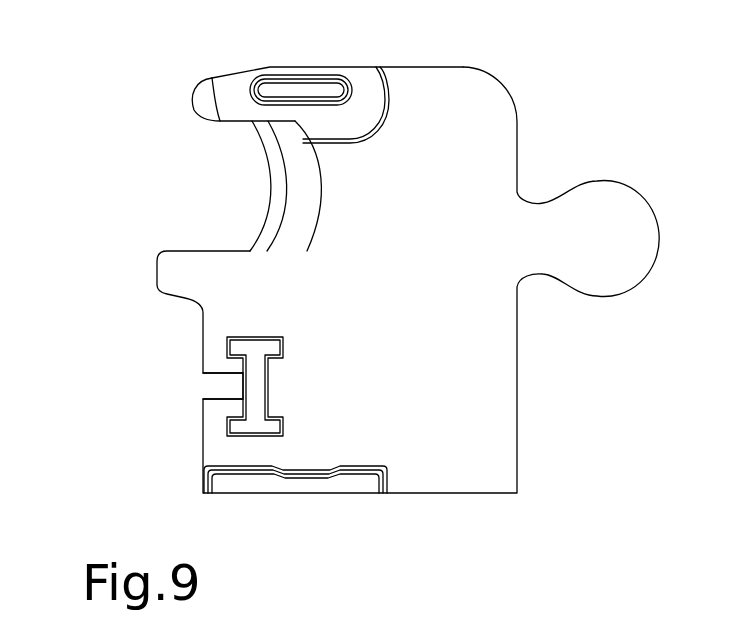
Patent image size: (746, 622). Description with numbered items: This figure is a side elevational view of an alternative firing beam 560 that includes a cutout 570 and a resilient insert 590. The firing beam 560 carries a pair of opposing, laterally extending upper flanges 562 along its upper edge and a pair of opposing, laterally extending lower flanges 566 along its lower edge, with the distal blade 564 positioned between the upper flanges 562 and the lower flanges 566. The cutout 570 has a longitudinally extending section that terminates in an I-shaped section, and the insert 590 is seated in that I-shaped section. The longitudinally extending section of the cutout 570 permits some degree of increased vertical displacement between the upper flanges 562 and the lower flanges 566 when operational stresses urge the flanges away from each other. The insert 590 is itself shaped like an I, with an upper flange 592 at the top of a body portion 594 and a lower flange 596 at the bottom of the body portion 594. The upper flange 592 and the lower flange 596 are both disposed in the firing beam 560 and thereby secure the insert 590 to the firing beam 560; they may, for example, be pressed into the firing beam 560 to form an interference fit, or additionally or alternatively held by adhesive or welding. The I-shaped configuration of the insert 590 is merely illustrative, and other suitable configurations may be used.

The firing beam 560 is at (143, 160).
The upper flanges 562 is at (303, 90).
The distal blade 564 is at (271, 190).
The lower flanges 566 is at (262, 485).
The cutout 570 is at (213, 383).
The resilient insert 590 is at (263, 377).
The upper flange 592 is at (262, 345).
The body portion 594 is at (255, 402).
The lower flange 596 is at (262, 428).